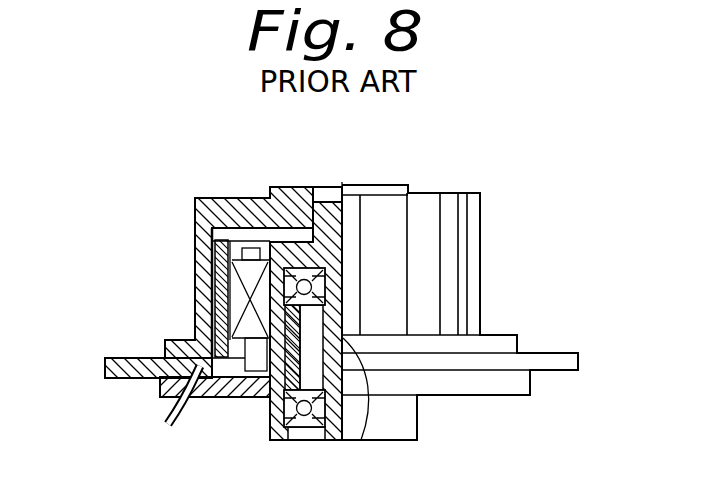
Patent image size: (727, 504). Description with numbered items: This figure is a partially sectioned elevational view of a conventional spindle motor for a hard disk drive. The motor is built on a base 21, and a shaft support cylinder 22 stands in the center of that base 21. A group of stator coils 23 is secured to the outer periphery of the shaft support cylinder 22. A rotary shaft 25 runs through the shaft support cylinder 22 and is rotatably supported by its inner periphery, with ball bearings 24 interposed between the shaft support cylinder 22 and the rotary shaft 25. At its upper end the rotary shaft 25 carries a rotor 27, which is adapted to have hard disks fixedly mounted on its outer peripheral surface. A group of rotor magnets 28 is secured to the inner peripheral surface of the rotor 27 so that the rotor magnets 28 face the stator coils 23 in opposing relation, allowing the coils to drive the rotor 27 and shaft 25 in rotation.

The base 21 is at (118, 366).
The shaft support cylinder 22 is at (212, 244).
The stator coils 23 is at (212, 274).
The ball bearings 24 is at (294, 441).
The rotary shaft 25 is at (361, 440).
The rotor 27 is at (253, 203).
The rotor magnets 28 is at (212, 301).